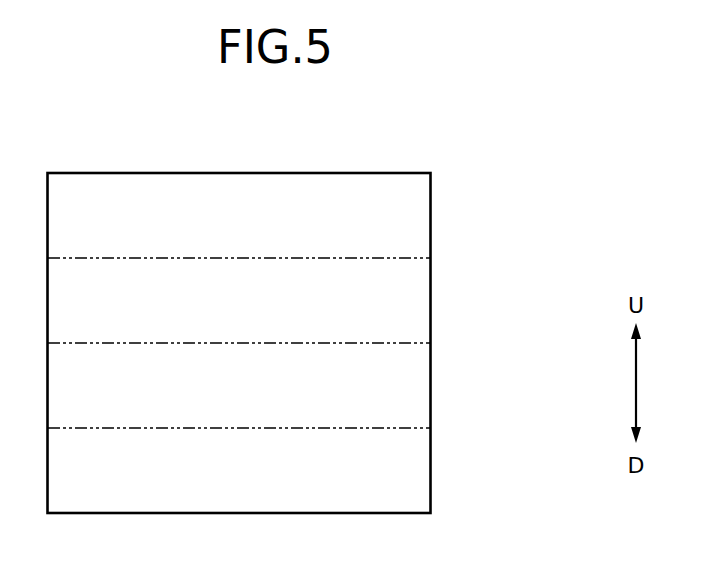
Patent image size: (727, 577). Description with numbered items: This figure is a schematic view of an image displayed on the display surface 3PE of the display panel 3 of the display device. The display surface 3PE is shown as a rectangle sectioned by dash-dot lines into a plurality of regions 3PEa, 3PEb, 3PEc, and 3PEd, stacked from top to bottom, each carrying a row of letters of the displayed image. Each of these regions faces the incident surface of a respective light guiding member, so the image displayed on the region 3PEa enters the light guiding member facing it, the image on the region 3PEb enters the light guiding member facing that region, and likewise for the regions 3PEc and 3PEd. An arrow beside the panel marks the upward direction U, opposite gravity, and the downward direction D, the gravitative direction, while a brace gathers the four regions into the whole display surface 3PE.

The display panel 3 is at (399, 173).
The display surface 3PE is at (542, 213).
The region 3PEa is at (431, 226).
The region 3PEb is at (431, 309).
The region 3PEc is at (431, 398).
The region 3PEd is at (431, 470).